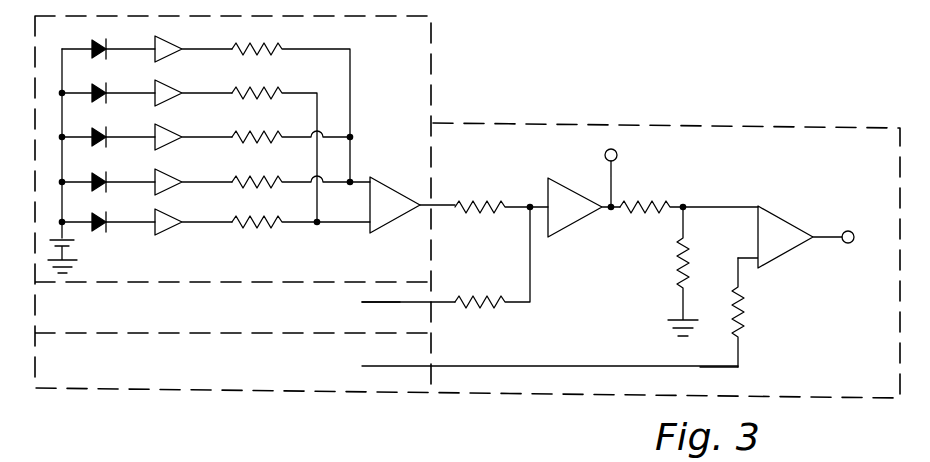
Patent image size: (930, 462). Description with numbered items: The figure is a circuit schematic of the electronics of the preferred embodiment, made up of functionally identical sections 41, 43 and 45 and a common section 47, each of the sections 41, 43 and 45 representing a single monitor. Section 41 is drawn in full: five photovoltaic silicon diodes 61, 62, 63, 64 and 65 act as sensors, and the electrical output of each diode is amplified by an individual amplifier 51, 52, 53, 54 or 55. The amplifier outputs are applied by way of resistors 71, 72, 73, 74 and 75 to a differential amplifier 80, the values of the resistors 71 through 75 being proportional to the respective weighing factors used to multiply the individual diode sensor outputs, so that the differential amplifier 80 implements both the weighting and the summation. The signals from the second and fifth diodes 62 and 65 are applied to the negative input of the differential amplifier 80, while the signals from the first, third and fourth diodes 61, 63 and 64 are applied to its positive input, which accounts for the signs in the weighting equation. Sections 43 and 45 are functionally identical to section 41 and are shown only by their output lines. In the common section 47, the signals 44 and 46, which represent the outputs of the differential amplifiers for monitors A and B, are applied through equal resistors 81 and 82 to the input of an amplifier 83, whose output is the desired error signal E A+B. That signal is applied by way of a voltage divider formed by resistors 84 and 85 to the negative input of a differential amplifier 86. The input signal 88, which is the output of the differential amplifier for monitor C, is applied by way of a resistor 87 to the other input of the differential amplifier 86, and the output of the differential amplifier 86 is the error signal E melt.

The section 41 is at (431, 83).
The common section 47 is at (783, 127).
The section 43 is at (430, 290).
The signal 44 is at (445, 207).
The section 45 is at (430, 354).
The signal 46 is at (437, 306).
The amplifier 51 is at (170, 40).
The amplifier 52 is at (170, 84).
The amplifier 53 is at (170, 128).
The amplifier 54 is at (170, 172).
The amplifier 55 is at (170, 214).
The diode 61 is at (99, 41).
The diode 62 is at (99, 85).
The diode 63 is at (99, 127).
The diode 64 is at (99, 170).
The diode 65 is at (99, 212).
The resistor 71 is at (270, 43).
The resistor 72 is at (272, 87).
The resistor 73 is at (255, 132).
The resistor 74 is at (255, 176).
The resistor 75 is at (255, 218).
The differential amplifier 80 is at (393, 178).
The resistor 81 is at (492, 202).
The resistor 82 is at (490, 298).
The amplifier 83 is at (578, 222).
The voltage divider resistor 84 is at (665, 204).
The voltage divider resistor 85 is at (675, 292).
The differential amplifier 86 is at (782, 220).
The resistor 87 is at (745, 320).
The input signal 88 is at (740, 352).